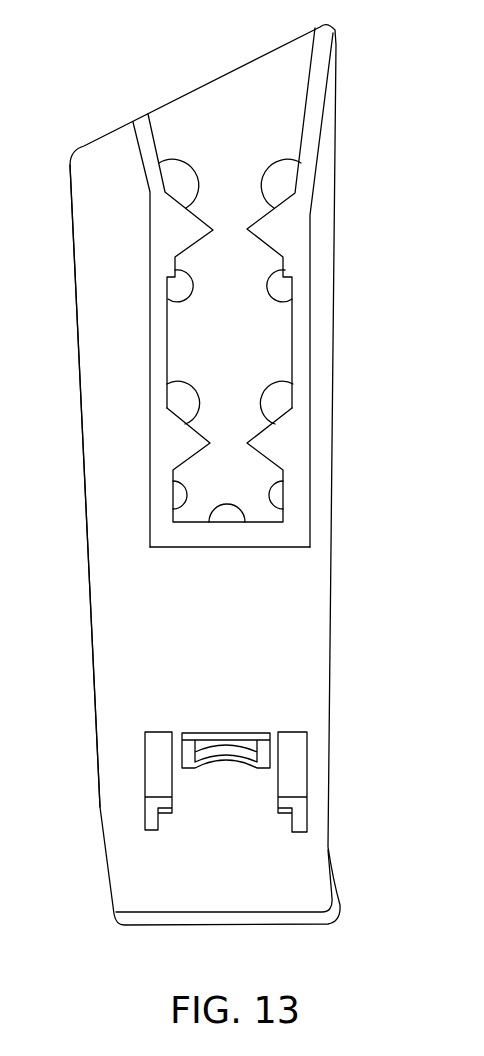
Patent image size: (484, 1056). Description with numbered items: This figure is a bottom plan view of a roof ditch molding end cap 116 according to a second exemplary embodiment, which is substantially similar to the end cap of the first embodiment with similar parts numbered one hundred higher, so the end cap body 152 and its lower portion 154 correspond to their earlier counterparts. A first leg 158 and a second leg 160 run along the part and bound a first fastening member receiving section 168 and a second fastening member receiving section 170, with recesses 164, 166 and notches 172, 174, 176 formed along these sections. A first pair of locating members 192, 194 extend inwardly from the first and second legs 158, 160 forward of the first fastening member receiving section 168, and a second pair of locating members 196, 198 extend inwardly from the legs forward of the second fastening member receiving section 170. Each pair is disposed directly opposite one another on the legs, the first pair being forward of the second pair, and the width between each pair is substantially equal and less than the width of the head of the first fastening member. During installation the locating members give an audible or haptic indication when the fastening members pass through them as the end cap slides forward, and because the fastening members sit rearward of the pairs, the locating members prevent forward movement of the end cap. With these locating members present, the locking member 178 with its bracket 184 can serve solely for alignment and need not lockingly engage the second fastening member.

The roof ditch molding end cap 116 is at (340, 619).
The roof ditch molding end cap body 152 is at (112, 263).
The end cap lower portion 154 is at (120, 782).
The first leg 158 is at (147, 190).
The second leg 160 is at (315, 186).
The end cap recess 164 is at (173, 302).
The end cap recess 166 is at (291, 298).
The first fastening member receiving section 168 is at (220, 258).
The second fastening member receiving section 170 is at (233, 477).
The end cap notch 172 is at (178, 509).
The end cap notch 174 is at (283, 512).
The end cap notch 176 is at (209, 514).
The locking member 178 is at (315, 768).
The locking member bracket 184 is at (195, 730).
The first locating member 192 is at (176, 162).
The first locating member 194 is at (290, 144).
The second locating member 196 is at (186, 382).
The second locating member 198 is at (282, 383).